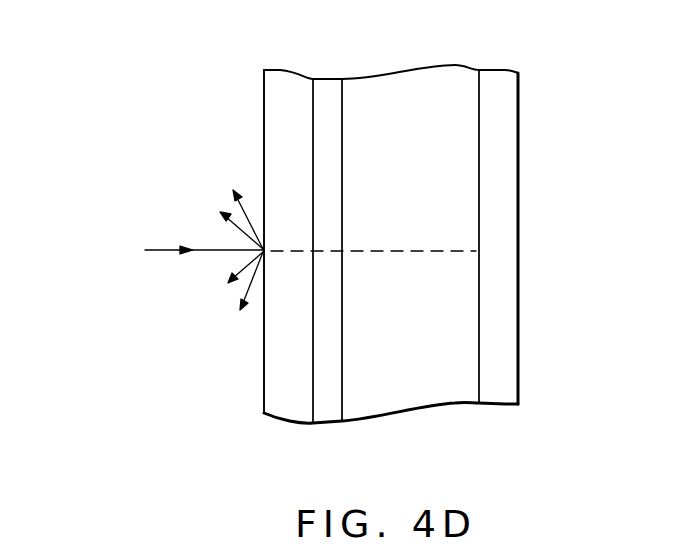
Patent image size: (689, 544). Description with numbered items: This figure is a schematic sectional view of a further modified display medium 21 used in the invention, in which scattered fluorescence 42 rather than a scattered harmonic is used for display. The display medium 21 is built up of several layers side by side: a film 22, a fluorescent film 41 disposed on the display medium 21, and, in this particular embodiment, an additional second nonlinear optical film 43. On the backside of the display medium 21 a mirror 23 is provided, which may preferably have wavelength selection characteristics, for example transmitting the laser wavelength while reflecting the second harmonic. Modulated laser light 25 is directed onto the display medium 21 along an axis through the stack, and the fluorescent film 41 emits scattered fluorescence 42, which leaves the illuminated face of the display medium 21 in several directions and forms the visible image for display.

The display medium 21 is at (538, 160).
The film 22 is at (430, 88).
The mirror 23 is at (503, 245).
The modulated laser light 25 is at (163, 250).
The fluorescent film 41 is at (328, 413).
The scattered fluorescence 42 is at (246, 293).
The second nonlinear optical film 43 is at (287, 411).